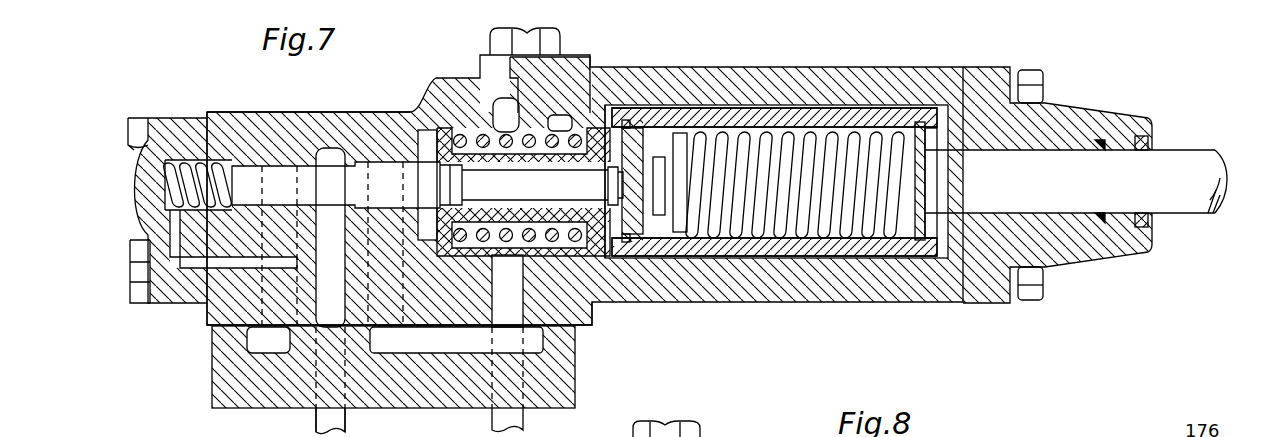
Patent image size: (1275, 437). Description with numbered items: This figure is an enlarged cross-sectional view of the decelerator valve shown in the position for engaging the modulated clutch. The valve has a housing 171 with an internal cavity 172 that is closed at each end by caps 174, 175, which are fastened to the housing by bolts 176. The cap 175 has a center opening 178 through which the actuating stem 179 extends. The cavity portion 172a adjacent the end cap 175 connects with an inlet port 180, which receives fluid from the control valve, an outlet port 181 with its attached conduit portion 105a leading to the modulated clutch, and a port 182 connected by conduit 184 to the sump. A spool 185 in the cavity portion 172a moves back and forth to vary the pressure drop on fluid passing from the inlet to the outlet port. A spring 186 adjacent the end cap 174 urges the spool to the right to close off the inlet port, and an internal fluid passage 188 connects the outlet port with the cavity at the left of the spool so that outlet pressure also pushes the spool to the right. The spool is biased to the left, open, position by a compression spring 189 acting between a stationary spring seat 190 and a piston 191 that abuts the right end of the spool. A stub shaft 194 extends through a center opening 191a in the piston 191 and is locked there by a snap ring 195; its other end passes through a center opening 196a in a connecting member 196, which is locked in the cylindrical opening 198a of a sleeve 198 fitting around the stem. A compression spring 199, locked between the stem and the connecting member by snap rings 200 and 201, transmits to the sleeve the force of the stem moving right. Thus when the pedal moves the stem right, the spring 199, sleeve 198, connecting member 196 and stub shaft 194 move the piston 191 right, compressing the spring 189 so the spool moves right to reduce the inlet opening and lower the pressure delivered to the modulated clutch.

The housing 171 is at (728, 302).
The internal cavity 172 is at (770, 262).
The cavity portion 172a is at (222, 163).
The cap 174 is at (168, 120).
The cap 175 is at (1090, 252).
The bolts 176 is at (128, 128).
The center opening 178 is at (1128, 157).
The actuating stem 179 is at (1205, 156).
The inlet port 180 is at (268, 296).
The outlet port 181 is at (335, 324).
The port 182 is at (395, 340).
The conduit 184 is at (497, 418).
The spool 185 is at (350, 170).
The spring 186 is at (162, 203).
The internal fluid passage 188 is at (247, 265).
The compression spring 189 is at (508, 65).
The stationary spring seat 190 is at (560, 135).
The piston 191 is at (472, 115).
The center opening 191a is at (544, 140).
The stub shaft 194 is at (534, 190).
The snap ring 195 is at (455, 184).
The connecting member 196 is at (638, 119).
The center opening 196a is at (542, 186).
The sleeve 198 is at (793, 112).
The cylindrical opening 198a is at (836, 246).
The compression spring 199 is at (818, 132).
The snap ring 200 is at (668, 150).
The snap ring 201 is at (938, 133).
The conduit portion 105a is at (322, 430).